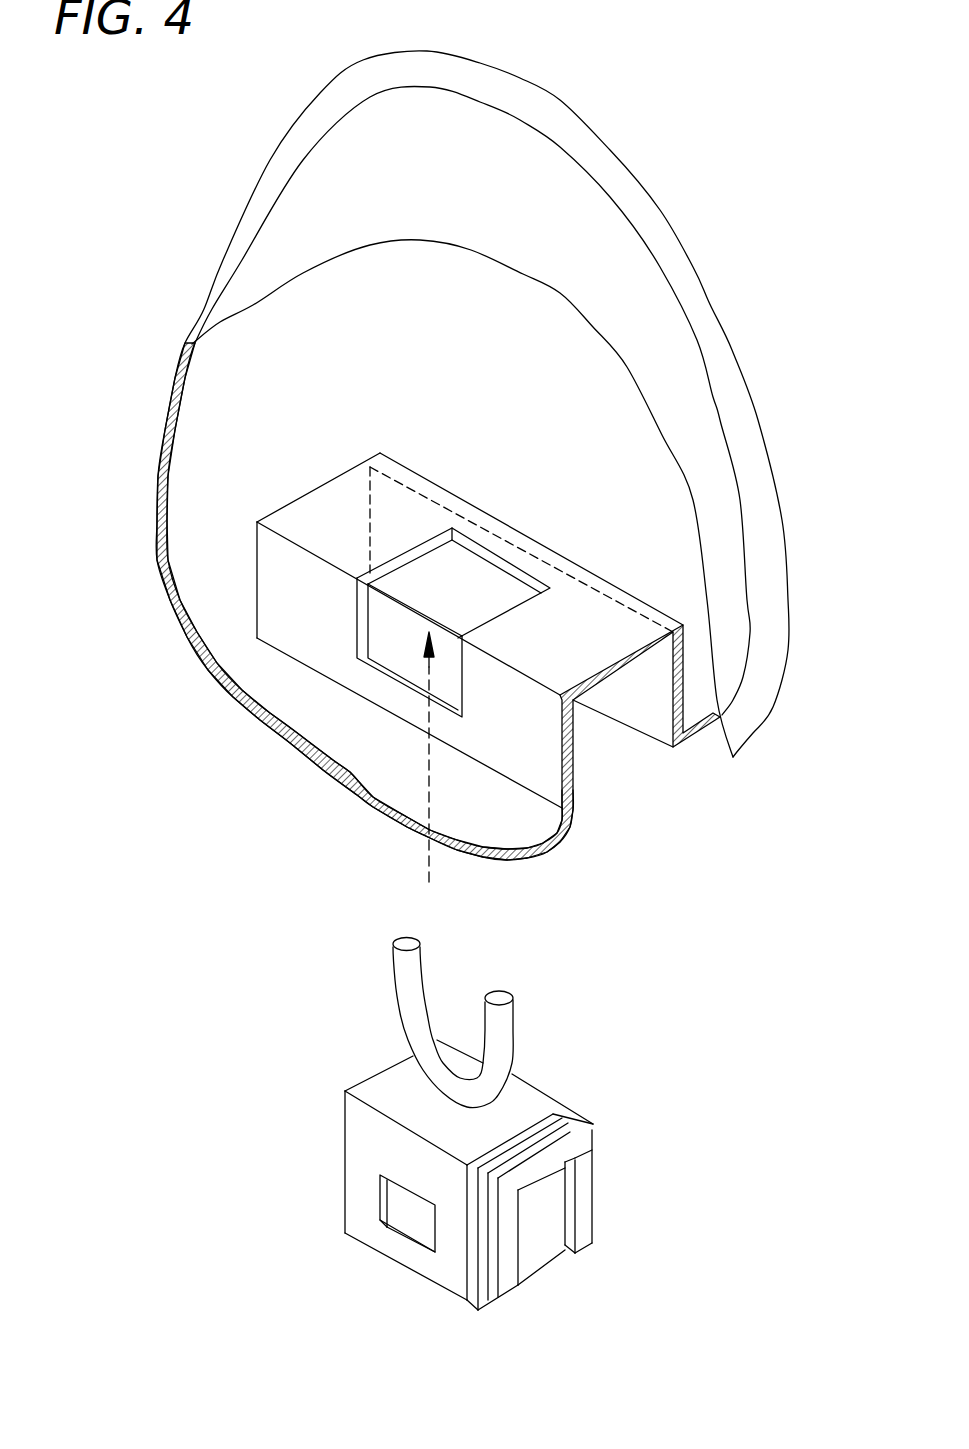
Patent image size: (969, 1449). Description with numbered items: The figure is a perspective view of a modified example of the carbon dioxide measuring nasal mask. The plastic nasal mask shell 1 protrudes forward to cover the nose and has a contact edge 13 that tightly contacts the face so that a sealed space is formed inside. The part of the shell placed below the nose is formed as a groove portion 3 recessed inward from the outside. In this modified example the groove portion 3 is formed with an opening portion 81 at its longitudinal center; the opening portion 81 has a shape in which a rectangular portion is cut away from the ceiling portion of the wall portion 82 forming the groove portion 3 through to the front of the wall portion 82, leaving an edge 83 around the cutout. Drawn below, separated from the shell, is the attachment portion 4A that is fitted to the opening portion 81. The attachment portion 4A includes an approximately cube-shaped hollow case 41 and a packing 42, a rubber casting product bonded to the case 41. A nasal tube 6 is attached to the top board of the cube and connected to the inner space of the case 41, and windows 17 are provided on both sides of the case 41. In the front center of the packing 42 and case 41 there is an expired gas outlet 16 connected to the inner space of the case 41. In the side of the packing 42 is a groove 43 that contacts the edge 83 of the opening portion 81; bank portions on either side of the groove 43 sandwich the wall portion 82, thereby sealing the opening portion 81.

The nasal mask shell 1 is at (250, 263).
The contact edge 13 is at (732, 350).
The groove portion 3 is at (607, 745).
The wall portion 82 is at (313, 511).
The opening portion 81 is at (405, 633).
The edge 83 is at (522, 578).
The nasal tube 6 is at (403, 963).
The packing 42 is at (367, 1133).
The groove 43 is at (558, 1141).
The case 41 is at (595, 1225).
The expired gas outlet 16 is at (405, 1230).
The windows 17 is at (533, 1238).
The attachment portion 4A is at (318, 1183).